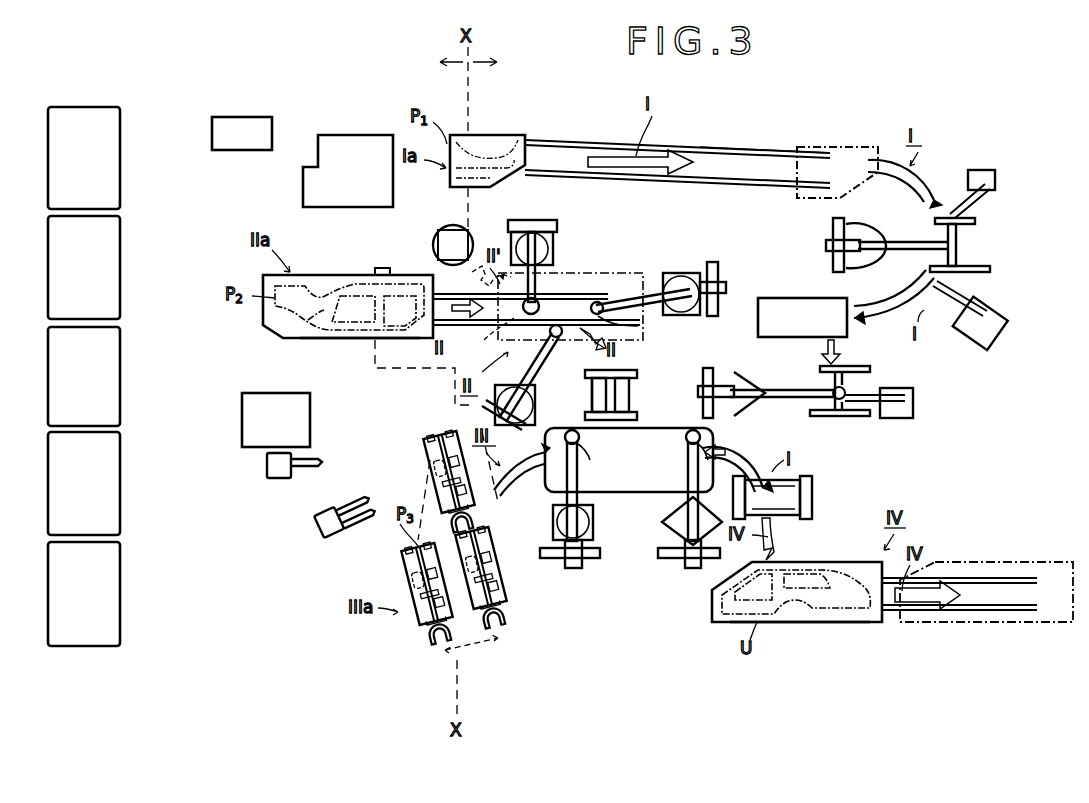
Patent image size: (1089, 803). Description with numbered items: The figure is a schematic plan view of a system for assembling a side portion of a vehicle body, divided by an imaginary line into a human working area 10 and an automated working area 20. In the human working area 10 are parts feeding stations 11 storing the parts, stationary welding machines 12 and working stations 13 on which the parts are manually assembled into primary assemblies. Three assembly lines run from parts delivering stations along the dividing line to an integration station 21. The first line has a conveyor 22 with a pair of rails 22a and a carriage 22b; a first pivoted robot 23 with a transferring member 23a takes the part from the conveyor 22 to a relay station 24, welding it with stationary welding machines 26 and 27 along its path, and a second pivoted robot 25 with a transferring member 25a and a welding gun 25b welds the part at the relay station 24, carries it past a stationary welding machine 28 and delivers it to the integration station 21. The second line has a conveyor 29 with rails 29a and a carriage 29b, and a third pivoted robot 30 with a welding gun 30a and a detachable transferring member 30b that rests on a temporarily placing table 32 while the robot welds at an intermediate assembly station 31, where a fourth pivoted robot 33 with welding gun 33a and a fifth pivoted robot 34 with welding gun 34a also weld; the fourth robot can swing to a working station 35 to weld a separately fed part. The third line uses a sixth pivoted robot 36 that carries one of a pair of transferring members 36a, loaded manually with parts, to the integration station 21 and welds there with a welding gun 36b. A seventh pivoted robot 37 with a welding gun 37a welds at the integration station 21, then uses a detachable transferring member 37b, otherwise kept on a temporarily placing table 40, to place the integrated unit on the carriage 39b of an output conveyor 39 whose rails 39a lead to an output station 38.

The human working area 10 is at (414, 78).
The automated working area 20 is at (540, 81).
The parts feeding stations 11 is at (112, 156).
The stationary welding machines 12 is at (279, 478).
The working stations 13 is at (241, 143).
The integration station 21 is at (616, 492).
The conveyor 22 is at (792, 130).
The rails 22a is at (729, 164).
The carriage 22b is at (500, 134).
The first pivoted robot 23 is at (870, 266).
The transferring member 23a is at (975, 268).
The relay station 24 is at (786, 318).
The second pivoted robot 25 is at (766, 404).
The transferring member 25a is at (857, 416).
The welding gun 25b is at (848, 390).
The stationary welding machine 26 is at (995, 180).
The stationary welding machine 27 is at (1002, 310).
The stationary welding machine 28 is at (902, 418).
The conveyor 29 is at (390, 272).
The rails 29a is at (510, 334).
The carriage 29b is at (310, 340).
The third pivoted robot 30 is at (562, 348).
The welding gun 30a is at (536, 309).
The transferring member 30b is at (592, 396).
The intermediate assembly station 31 is at (586, 263).
The temporarily placing table 32 is at (634, 396).
The fourth pivoted robot 33 is at (546, 272).
The welding gun 33a is at (545, 304).
The fifth pivoted robot 34 is at (646, 292).
The welding gun 34a is at (606, 312).
The working station 35 is at (466, 232).
The sixth pivoted robot 36 is at (556, 498).
The transferring members 36a is at (418, 618).
The welding gun 36b is at (584, 444).
The seventh pivoted robot 37 is at (674, 494).
The welding gun 37a is at (682, 444).
The transferring member 37b is at (812, 504).
The output station 38 is at (1010, 562).
The conveyor 39 is at (834, 554).
The rails 39a is at (934, 604).
The carriage 39b is at (828, 622).
The temporarily placing table 40 is at (812, 492).